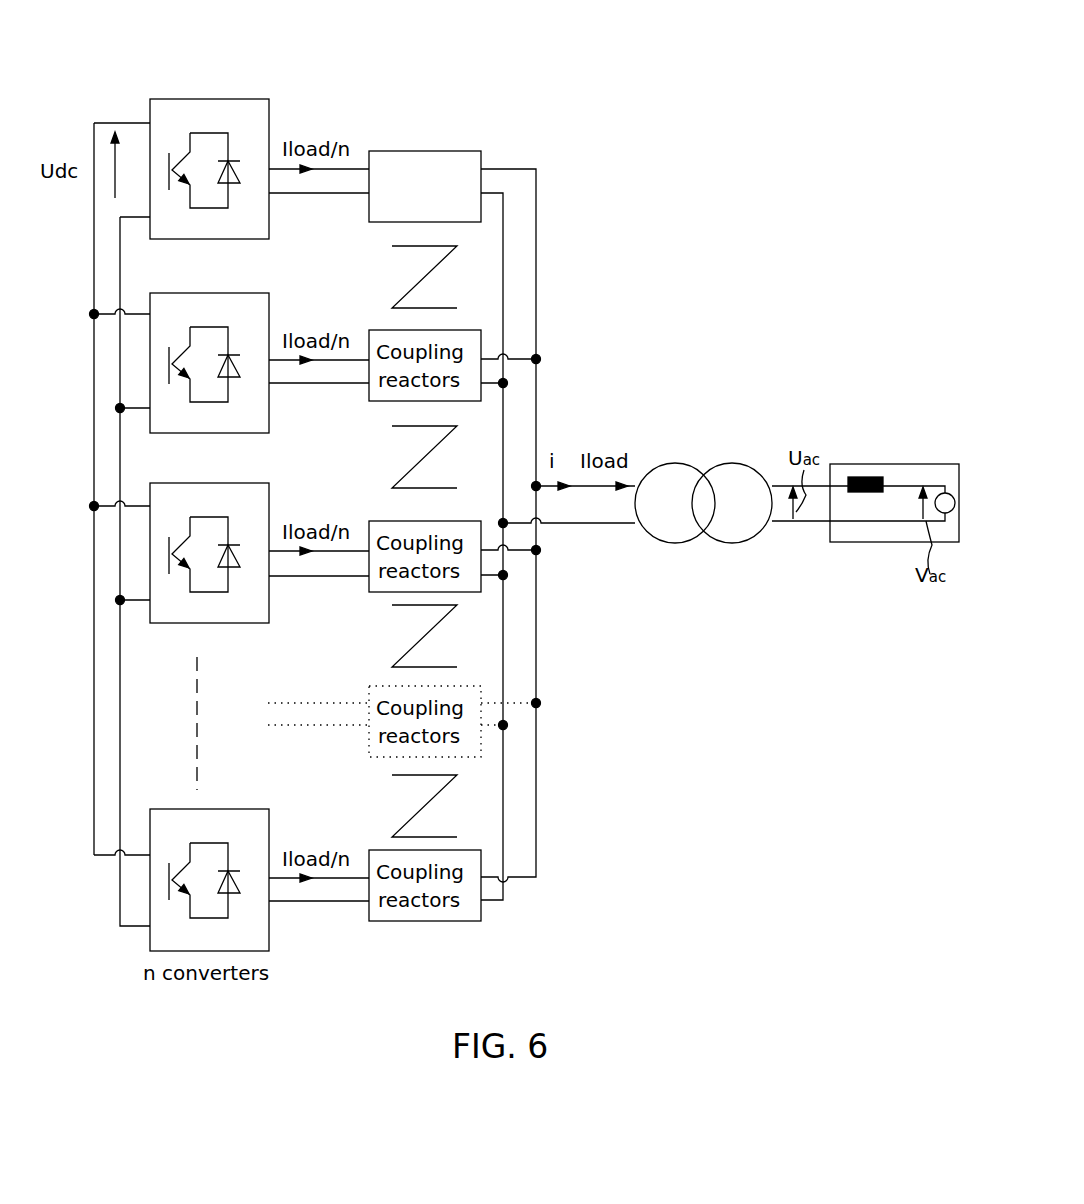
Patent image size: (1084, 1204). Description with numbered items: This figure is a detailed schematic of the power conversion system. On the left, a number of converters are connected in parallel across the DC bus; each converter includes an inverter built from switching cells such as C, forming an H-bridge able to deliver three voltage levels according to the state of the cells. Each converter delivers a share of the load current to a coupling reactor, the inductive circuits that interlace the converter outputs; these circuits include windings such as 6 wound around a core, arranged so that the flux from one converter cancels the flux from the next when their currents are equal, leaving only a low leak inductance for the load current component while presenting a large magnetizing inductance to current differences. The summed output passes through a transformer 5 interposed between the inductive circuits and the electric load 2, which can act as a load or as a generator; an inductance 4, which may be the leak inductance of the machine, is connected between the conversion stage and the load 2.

The switching cell C is at (212, 92).
The winding 6 is at (425, 151).
The transformer 5 is at (707, 465).
The inductance 4 is at (860, 477).
The electric load 2 is at (895, 464).